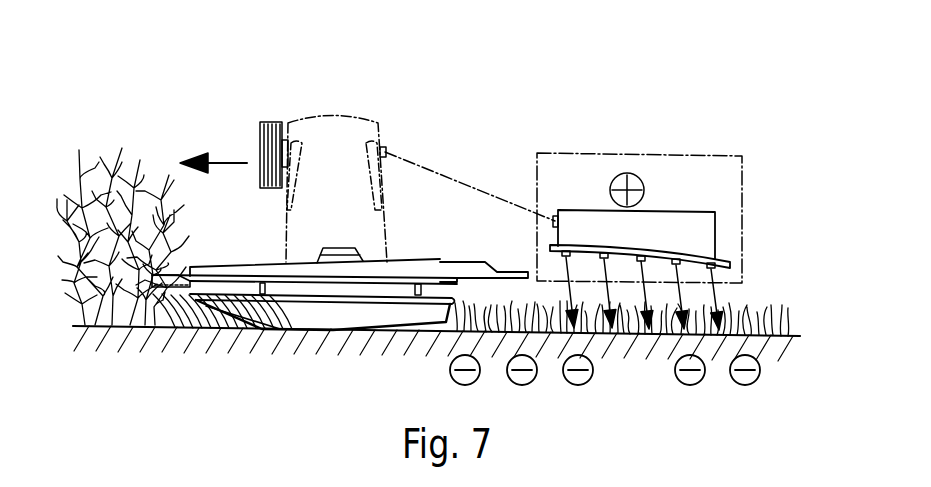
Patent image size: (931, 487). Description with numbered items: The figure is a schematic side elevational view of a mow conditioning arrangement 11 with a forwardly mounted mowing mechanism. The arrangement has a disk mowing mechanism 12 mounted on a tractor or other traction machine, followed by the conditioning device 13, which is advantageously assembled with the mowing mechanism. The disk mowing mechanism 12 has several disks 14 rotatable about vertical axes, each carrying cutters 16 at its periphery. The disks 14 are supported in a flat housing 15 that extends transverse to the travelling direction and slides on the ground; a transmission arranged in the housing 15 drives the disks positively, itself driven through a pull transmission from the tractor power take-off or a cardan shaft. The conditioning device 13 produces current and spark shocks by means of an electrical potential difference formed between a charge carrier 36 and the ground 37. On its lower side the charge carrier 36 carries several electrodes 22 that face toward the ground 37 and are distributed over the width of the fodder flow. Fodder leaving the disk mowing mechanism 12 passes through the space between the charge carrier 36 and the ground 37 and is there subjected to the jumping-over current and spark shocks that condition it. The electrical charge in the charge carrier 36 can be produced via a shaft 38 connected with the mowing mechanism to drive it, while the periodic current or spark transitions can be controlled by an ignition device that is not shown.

The mow conditioning arrangement 11 is at (490, 76).
The disk mowing mechanism 12 is at (428, 185).
The conditioning device 13 is at (743, 108).
The disks 14 is at (453, 264).
The housing 15 is at (291, 330).
The cutters 16 is at (167, 275).
The electrodes 22 is at (718, 270).
The charge carrier 36 is at (645, 250).
The ground 37 is at (647, 388).
The shaft 38 is at (435, 170).